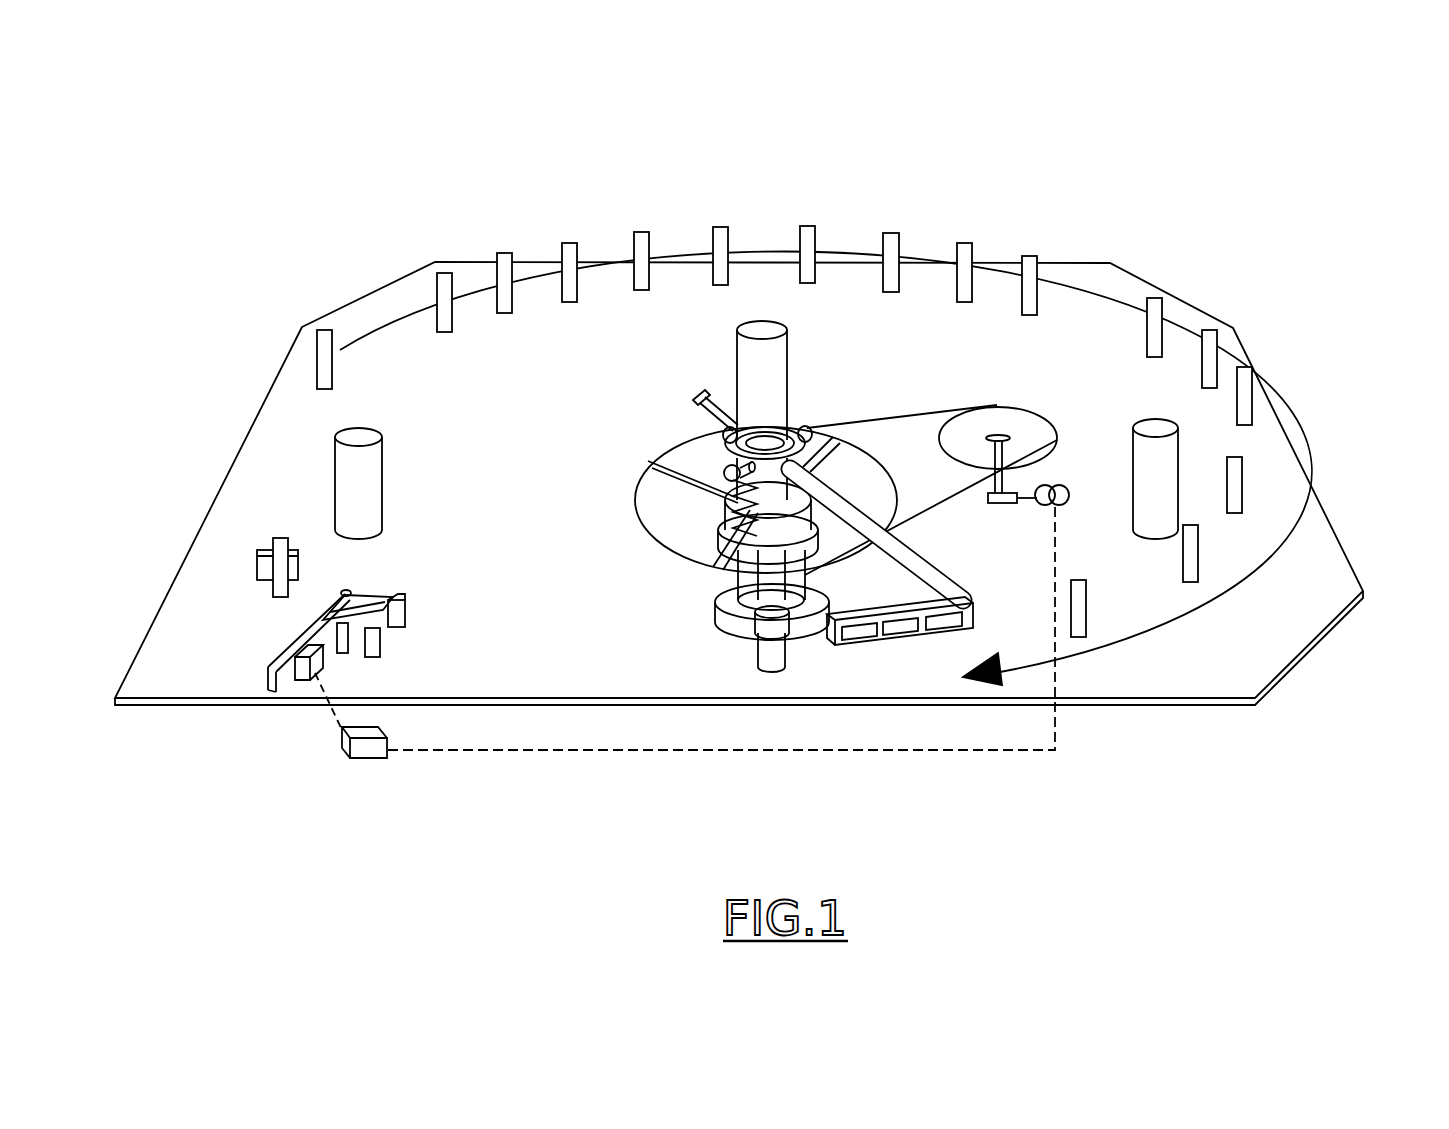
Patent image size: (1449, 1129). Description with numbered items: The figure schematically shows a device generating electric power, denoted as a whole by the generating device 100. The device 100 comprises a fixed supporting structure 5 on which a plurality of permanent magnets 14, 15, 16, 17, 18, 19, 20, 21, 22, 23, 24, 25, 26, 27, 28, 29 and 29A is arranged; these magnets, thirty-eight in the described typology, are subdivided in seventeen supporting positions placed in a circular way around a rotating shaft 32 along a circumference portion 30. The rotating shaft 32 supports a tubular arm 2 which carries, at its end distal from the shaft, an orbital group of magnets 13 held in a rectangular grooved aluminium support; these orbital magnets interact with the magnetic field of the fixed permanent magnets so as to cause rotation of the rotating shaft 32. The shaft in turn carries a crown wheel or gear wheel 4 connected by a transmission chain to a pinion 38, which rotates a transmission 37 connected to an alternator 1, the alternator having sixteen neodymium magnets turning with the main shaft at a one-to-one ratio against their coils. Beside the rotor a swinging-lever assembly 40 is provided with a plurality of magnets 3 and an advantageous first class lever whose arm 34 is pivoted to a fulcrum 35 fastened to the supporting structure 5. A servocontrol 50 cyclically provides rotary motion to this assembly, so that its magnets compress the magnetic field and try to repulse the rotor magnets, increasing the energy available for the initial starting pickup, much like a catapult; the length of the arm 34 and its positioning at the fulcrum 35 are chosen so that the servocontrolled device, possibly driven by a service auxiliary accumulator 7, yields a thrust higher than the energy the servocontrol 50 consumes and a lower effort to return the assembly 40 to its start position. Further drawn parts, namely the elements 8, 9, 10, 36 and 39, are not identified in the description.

The generating device 100 is at (1282, 253).
The alternator 1 is at (1060, 485).
The tubular arm 2 is at (922, 563).
The magnets 3 is at (340, 659).
The gear wheel 4 is at (843, 477).
The fixed supporting structure 5 is at (183, 648).
The service auxiliary accumulator 7 is at (373, 760).
The drive base 8 is at (718, 613).
The connection line 9 is at (727, 752).
The column 10 is at (383, 483).
The orbital group of magnets 13 is at (953, 618).
The permanent magnet 14 is at (315, 352).
The permanent magnet 15 is at (432, 285).
The permanent magnet 16 is at (495, 275).
The permanent magnet 17 is at (558, 267).
The permanent magnet 18 is at (633, 245).
The permanent magnet 19 is at (710, 238).
The permanent magnet 20 is at (798, 237).
The permanent magnet 21 is at (882, 248).
The permanent magnet 22 is at (955, 255).
The permanent magnet 23 is at (1022, 262).
The permanent magnet 24 is at (1145, 303).
The permanent magnet 25 is at (1207, 330).
The permanent magnet 26 is at (1253, 383).
The permanent magnet 27 is at (1242, 480).
The permanent magnet 28 is at (1200, 550).
The permanent magnet 29 is at (1087, 608).
The permanent magnet 29A is at (270, 537).
The circumference portion 30 is at (1145, 322).
The rotating shaft 32 is at (753, 510).
The arm 34 is at (298, 647).
The fulcrum 35 is at (348, 592).
The slide block 36 is at (330, 693).
The transmission 37 is at (993, 503).
The pinion 38 is at (1007, 435).
The hub 39 is at (802, 428).
The swinging-lever assembly 40 is at (438, 555).
The servocontrol 50 is at (315, 667).